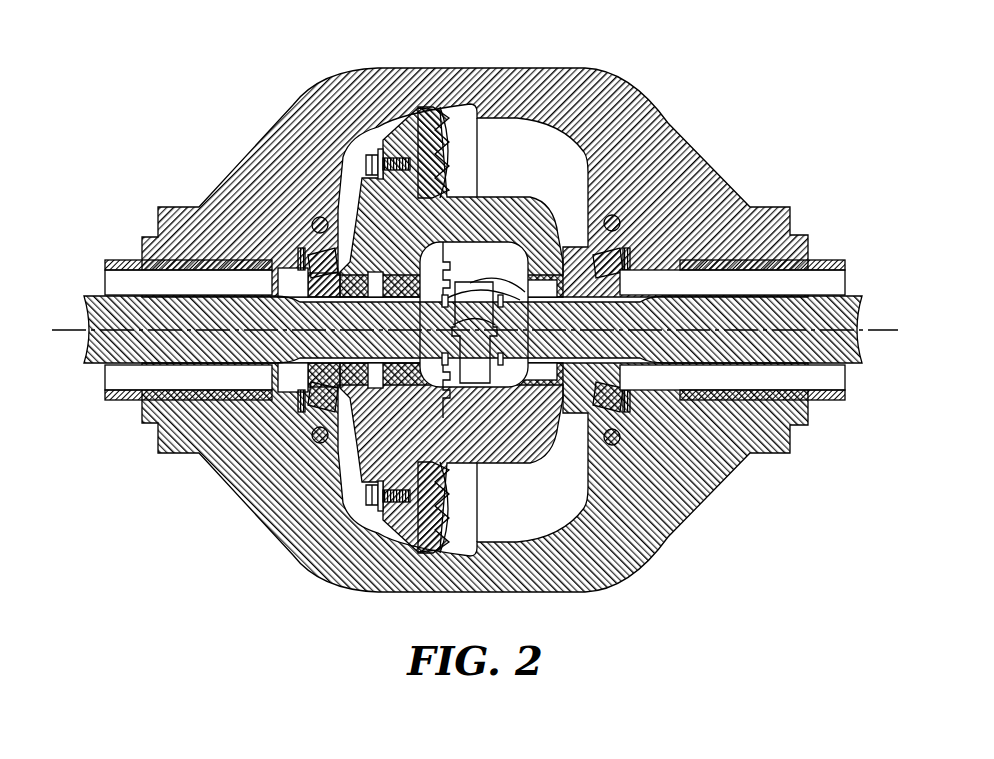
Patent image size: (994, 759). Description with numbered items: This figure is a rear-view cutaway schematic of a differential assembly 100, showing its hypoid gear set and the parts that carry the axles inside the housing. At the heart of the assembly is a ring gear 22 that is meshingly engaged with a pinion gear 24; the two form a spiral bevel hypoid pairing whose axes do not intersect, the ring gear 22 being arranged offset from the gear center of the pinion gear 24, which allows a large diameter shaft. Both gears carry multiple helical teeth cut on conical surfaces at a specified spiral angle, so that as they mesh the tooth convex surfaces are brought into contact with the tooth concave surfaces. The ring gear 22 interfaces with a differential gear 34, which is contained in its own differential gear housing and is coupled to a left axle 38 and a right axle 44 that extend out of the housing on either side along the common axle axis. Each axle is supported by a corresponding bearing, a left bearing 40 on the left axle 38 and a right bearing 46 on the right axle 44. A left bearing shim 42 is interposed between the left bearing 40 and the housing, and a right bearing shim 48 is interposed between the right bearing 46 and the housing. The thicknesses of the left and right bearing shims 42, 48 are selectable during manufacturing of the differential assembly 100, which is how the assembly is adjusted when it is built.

The differential assembly 100 is at (712, 104).
The ring gear 22 is at (402, 142).
The pinion gear 24 is at (481, 306).
The differential gear 34 is at (352, 180).
The left axle 38 is at (134, 312).
The left bearing 40 is at (320, 412).
The left bearing shim 42 is at (294, 408).
The right axle 44 is at (803, 312).
The right bearing 46 is at (612, 410).
The right bearing shim 48 is at (636, 406).